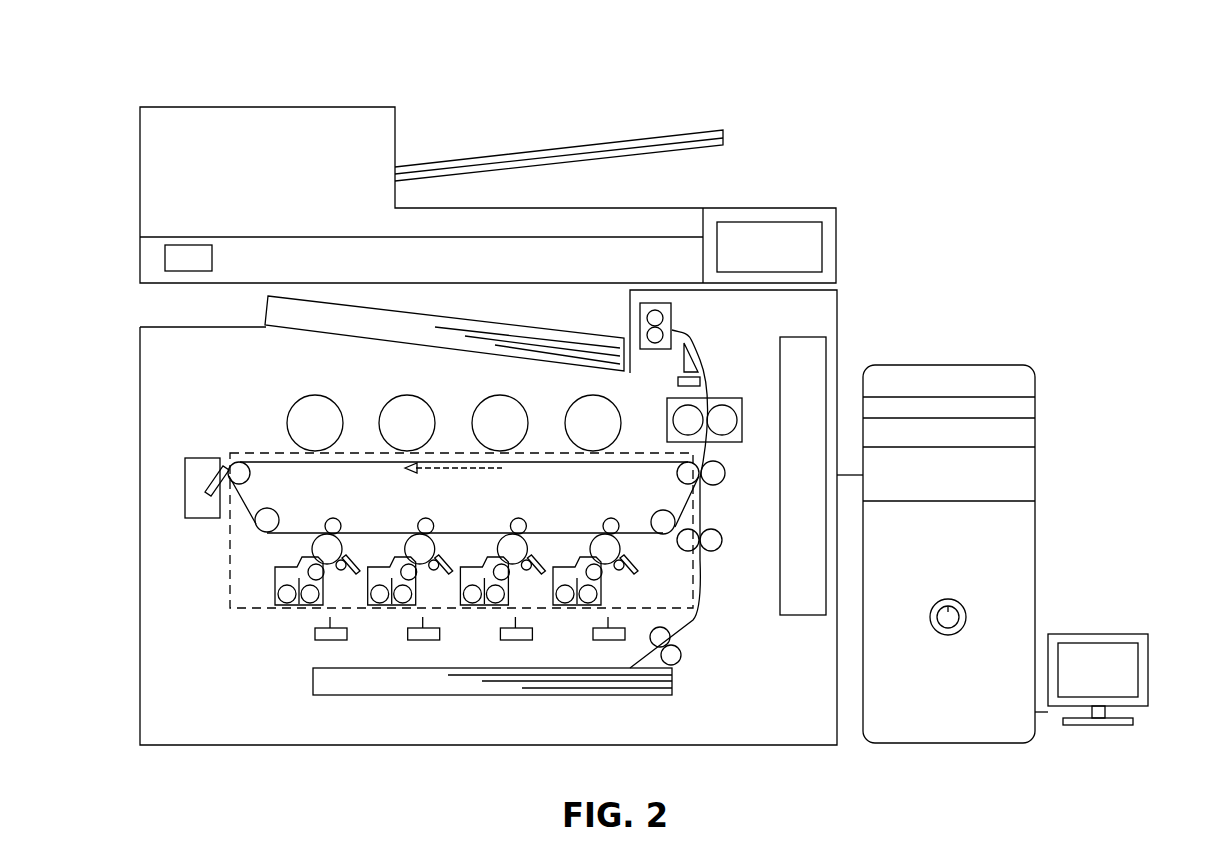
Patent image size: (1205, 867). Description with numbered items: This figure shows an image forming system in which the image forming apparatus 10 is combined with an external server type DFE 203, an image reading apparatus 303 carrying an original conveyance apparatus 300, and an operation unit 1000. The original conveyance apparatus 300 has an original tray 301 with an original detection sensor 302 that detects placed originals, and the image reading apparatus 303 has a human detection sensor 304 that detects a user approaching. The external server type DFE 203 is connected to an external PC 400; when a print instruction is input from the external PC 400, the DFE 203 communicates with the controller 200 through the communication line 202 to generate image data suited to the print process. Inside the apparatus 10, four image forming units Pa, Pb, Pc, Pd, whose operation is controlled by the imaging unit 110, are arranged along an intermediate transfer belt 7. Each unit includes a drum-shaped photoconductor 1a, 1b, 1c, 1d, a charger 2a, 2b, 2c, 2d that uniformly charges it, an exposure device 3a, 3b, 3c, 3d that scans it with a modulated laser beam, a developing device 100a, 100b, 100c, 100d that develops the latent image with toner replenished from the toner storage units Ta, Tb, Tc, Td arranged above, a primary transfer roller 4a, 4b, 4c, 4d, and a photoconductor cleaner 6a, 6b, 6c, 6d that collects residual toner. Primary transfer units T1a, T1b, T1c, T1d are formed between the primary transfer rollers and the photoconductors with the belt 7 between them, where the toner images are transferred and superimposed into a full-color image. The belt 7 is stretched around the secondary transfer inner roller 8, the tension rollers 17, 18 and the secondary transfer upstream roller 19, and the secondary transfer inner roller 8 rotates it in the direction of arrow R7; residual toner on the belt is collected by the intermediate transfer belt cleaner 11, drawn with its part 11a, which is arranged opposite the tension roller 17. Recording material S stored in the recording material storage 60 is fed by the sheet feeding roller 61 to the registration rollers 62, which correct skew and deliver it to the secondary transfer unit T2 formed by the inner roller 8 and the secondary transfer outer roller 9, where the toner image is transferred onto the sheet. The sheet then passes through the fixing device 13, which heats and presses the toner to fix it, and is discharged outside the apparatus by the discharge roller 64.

The image forming apparatus 10 is at (140, 334).
The original conveyance apparatus 300 is at (214, 107).
The original tray 301 is at (626, 141).
The original detection sensor 302 is at (478, 158).
The image reading apparatus 303 is at (140, 264).
The human detection sensor 304 is at (198, 245).
The operation unit 1000 is at (808, 209).
The controller 200 is at (800, 337).
The communication line 202 is at (843, 474).
The external server type DFE 203 is at (958, 365).
The external PC 400 is at (1100, 634).
The toner storage unit Ta is at (295, 405).
The toner storage unit Tb is at (388, 405).
The toner storage unit Tc is at (481, 405).
The toner storage unit Td is at (572, 407).
The photoconductor 1a is at (312, 549).
The photoconductor 1b is at (401, 549).
The photoconductor 1c is at (493, 549).
The photoconductor 1d is at (586, 549).
The charger 2a is at (330, 579).
The charger 2b is at (425, 588).
The charger 2c is at (517, 588).
The charger 2d is at (610, 588).
The exposure device 3a is at (314, 637).
The exposure device 3b is at (411, 644).
The exposure device 3c is at (503, 644).
The exposure device 3d is at (596, 644).
The primary transfer roller 4a is at (333, 518).
The primary transfer roller 4b is at (422, 504).
The primary transfer roller 4c is at (514, 504).
The primary transfer roller 4d is at (607, 504).
The photoconductor cleaner 6a is at (356, 572).
The photoconductor cleaner 6b is at (444, 574).
The photoconductor cleaner 6c is at (536, 574).
The photoconductor cleaner 6d is at (638, 555).
The developing device 100a is at (298, 606).
The developing device 100b is at (379, 602).
The developing device 100c is at (471, 602).
The developing device 100d is at (564, 602).
The intermediate transfer belt 7 is at (285, 462).
The arrow indicating belt rotation direction R7 is at (467, 473).
The secondary transfer inner roller 8 is at (682, 464).
The secondary transfer outer roller 9 is at (724, 467).
The intermediate transfer belt cleaner 11 is at (196, 458).
The cleaning blade 11a is at (205, 481).
The fixing device 13 is at (725, 399).
The tension roller 17 is at (234, 463).
The tension roller 18 is at (268, 508).
The secondary transfer upstream roller 19 is at (667, 535).
The recording material storage 60 is at (313, 688).
The sheet feeding roller 61 is at (681, 662).
The registration rollers 62 is at (719, 550).
The discharge roller 64 is at (672, 328).
The imaging unit 110 is at (230, 605).
The recording material S is at (557, 689).
The primary transfer unit T1a is at (320, 540).
The primary transfer unit T1b is at (397, 515).
The primary transfer unit T1c is at (490, 515).
The primary transfer unit T1d is at (582, 515).
The secondary transfer unit T2 is at (718, 486).
The image forming unit Pa is at (340, 512).
The image forming unit Pb is at (450, 490).
The image forming unit Pc is at (542, 490).
The image forming unit Pd is at (635, 490).